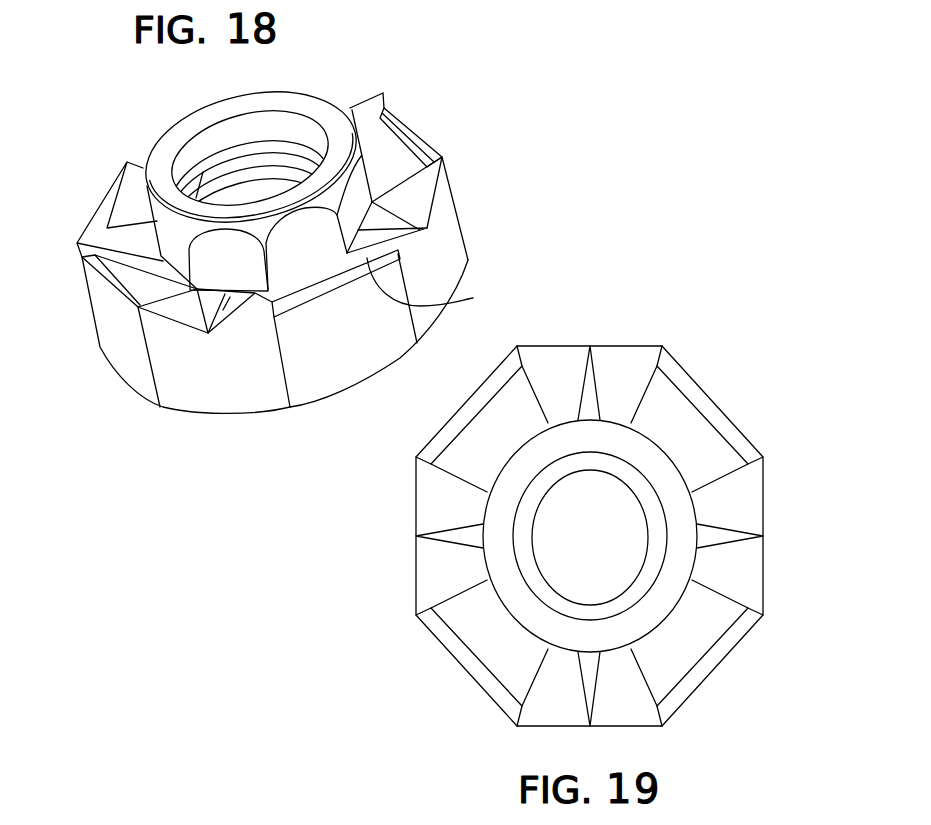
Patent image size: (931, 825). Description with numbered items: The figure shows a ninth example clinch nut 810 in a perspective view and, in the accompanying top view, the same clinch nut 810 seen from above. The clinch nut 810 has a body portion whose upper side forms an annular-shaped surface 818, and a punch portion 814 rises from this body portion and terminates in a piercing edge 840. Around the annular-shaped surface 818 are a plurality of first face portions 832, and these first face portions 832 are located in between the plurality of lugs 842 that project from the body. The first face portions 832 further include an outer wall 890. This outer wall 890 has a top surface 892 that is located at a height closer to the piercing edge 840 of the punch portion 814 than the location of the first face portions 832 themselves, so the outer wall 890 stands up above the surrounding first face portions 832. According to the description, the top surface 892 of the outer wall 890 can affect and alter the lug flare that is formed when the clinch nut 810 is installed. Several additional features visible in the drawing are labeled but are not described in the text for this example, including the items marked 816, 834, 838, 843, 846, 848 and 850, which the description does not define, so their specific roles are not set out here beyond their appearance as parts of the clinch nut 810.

In FIG. 18, the clinch nut 810 is at (416, 62).
In FIG. 19, the clinch nut 810 is at (373, 631).
In FIG. 18, the punch portion 814 is at (138, 145).
In FIG. 18, the threaded bore 816 is at (221, 167).
In FIG. 18, the annular-shaped surface 818 is at (383, 173).
In FIG. 18, the first face portions 832 is at (143, 275).
In FIG. 19, the first face portions 832 is at (589, 500).
In FIG. 18, the hex face 834 is at (306, 248).
In FIG. 18, the skirt face 838 is at (345, 330).
In FIG. 18, the piercing edge 840 is at (301, 83).
In FIG. 18, the lugs 842 is at (173, 354).
In FIG. 18, the flange strip 843 is at (367, 258).
In FIG. 18, the tang 846 is at (221, 330).
In FIG. 19, the tang 846 is at (592, 672).
In FIG. 18, the tab 848 is at (181, 311).
In FIG. 19, the tab 848 is at (538, 707).
In FIG. 18, the tab 850 is at (240, 312).
In FIG. 19, the tab 850 is at (640, 688).
In FIG. 18, the outer wall 890 is at (397, 120).
In FIG. 19, the outer wall 890 is at (677, 374).
In FIG. 18, the top surface 892 is at (410, 140).
In FIG. 19, the top surface 892 is at (725, 430).